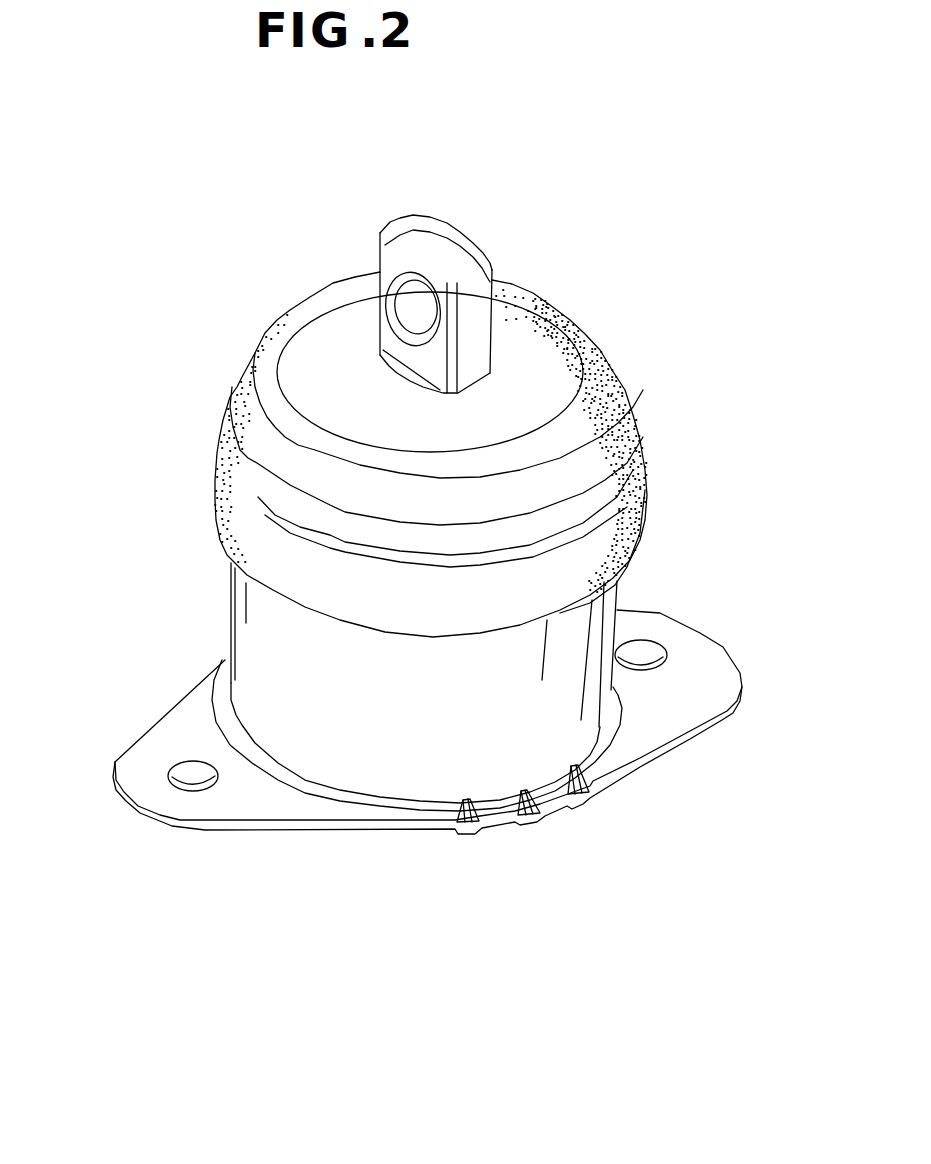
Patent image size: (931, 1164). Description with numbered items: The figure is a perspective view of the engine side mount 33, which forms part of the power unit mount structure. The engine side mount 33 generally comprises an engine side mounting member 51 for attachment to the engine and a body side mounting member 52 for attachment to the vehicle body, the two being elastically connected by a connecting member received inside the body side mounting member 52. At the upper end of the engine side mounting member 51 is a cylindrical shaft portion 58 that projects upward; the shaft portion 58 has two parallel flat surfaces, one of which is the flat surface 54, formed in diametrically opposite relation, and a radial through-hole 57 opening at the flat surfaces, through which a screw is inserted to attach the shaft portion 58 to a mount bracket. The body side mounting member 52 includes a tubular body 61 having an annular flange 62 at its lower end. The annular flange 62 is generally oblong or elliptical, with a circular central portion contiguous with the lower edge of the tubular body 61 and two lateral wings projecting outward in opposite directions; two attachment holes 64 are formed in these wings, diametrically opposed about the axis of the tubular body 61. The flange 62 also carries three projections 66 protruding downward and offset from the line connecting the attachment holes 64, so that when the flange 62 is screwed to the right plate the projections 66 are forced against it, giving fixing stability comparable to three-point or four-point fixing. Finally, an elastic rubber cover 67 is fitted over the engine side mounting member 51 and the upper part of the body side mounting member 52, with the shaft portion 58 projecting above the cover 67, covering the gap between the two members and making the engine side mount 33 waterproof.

The engine side mount 33 is at (194, 217).
The engine side mounting member 51 is at (466, 217).
The body side mounting member 52 is at (222, 601).
The flat surface 54 is at (380, 247).
The through-hole 57 is at (413, 313).
The shaft portion 58 is at (493, 318).
The tubular body 61 is at (398, 732).
The annular flange 62 is at (255, 805).
The attachment holes 64 is at (183, 765).
The projections 66 is at (465, 832).
The cover 67 is at (220, 420).